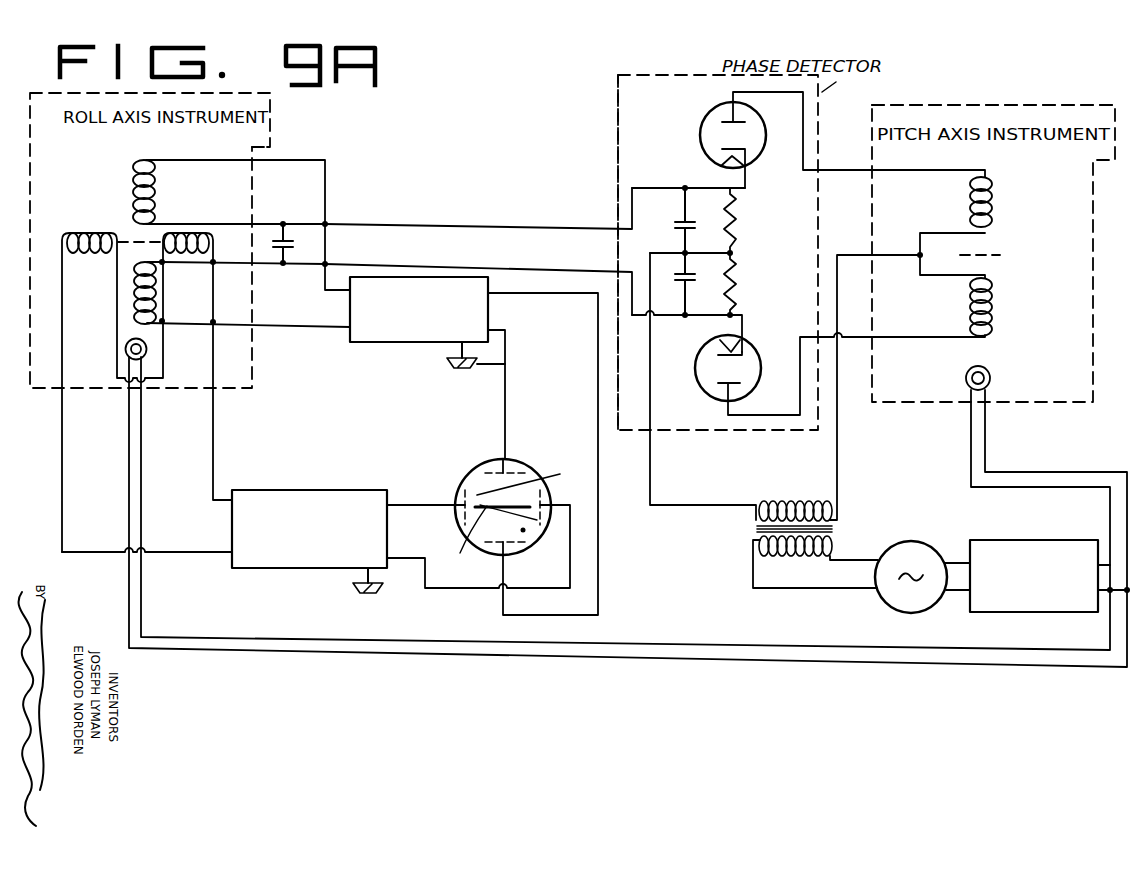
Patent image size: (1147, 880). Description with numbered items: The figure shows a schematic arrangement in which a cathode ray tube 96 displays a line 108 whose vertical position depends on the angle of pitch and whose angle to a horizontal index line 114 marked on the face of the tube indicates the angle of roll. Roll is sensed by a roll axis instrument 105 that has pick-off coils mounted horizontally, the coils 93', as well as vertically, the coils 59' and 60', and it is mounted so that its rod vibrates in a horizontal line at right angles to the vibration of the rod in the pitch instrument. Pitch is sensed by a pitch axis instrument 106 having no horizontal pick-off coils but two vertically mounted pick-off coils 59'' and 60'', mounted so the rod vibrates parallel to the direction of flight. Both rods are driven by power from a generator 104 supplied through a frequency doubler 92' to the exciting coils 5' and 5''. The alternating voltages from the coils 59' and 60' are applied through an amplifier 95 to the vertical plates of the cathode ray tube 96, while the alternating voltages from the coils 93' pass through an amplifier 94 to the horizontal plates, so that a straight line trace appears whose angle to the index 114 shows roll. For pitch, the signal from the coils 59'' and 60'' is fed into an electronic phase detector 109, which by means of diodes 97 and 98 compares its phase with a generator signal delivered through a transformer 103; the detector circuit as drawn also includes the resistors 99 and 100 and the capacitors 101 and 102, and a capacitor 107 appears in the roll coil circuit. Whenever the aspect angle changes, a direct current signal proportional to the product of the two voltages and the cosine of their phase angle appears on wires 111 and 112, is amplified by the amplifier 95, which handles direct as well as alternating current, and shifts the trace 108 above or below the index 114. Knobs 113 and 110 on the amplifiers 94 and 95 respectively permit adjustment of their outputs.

The roll axis instrument 105 is at (271, 137).
The vertical pick-off coil 59' is at (161, 192).
The horizontal pick-off coils 93' is at (155, 249).
The vertical pick-off coil 60' is at (165, 293).
The exciting coil 5' is at (158, 349).
The capacitor 107 is at (290, 212).
The wire 111 is at (587, 228).
The wire 112 is at (583, 274).
The amplifier 95 is at (383, 346).
The knob 110 is at (461, 372).
The amplifier 94 is at (325, 489).
The knob 113 is at (379, 598).
The cathode ray tube 96 is at (480, 466).
The line 108 is at (533, 480).
The horizontal index line 114 is at (466, 540).
The electronic phase detector 109 is at (617, 113).
The diode 97 is at (700, 131).
The diode 98 is at (696, 373).
The resistor 100 is at (738, 221).
The resistor 99 is at (740, 296).
The capacitor 101 is at (682, 221).
The capacitor 102 is at (692, 285).
The pitch axis instrument 106 is at (1004, 106).
The vertical pick-off coil 59'' is at (1001, 202).
The vertical pick-off coil 60'' is at (1000, 307).
The exciting coil 5'' is at (1001, 378).
The transformer 103 is at (835, 528).
The generator 104 is at (915, 541).
The frequency doubler 92' is at (1034, 563).